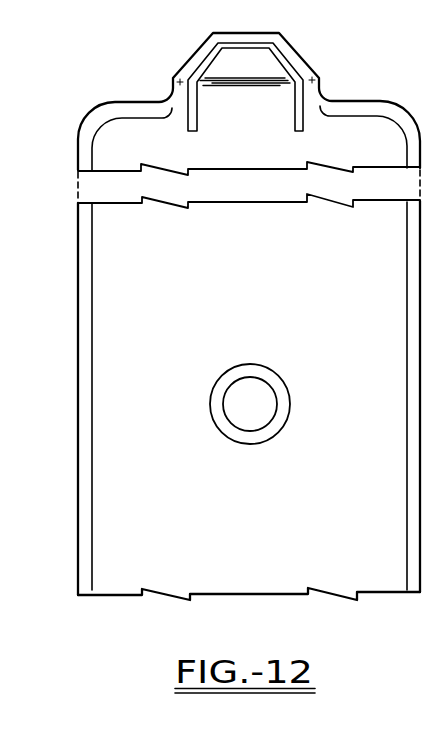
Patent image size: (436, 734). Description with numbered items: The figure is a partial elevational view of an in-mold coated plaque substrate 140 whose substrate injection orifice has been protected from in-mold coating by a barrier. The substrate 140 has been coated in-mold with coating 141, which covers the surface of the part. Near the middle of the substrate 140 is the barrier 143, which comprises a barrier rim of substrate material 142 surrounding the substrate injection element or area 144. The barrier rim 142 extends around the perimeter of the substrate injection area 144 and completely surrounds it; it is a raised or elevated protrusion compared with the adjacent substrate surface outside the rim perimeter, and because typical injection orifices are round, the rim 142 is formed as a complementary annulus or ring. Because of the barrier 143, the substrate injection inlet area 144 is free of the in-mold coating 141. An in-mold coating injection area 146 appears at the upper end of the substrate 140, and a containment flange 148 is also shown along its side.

The plaque substrate 140 is at (135, 82).
The in-mold coating 141 is at (126, 308).
The barrier rim 142 is at (273, 401).
The barrier 143 is at (263, 452).
The substrate injection area 144 is at (241, 409).
The in-mold coating injection area 146 is at (251, 65).
The containment flange 148 is at (79, 459).